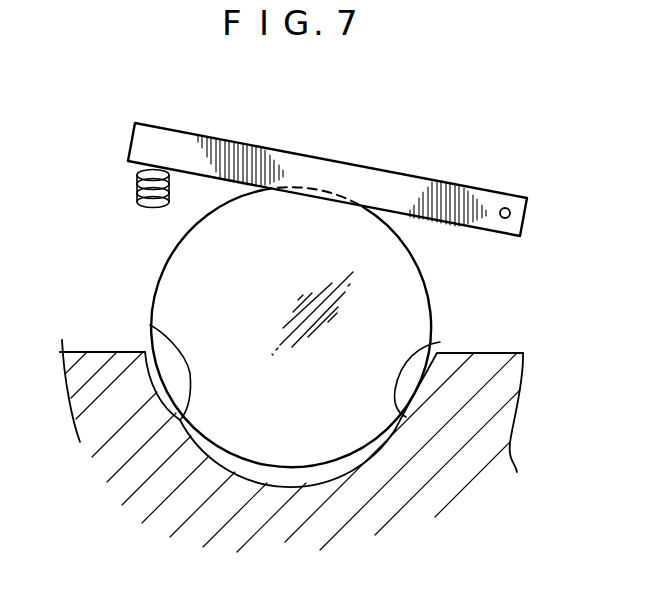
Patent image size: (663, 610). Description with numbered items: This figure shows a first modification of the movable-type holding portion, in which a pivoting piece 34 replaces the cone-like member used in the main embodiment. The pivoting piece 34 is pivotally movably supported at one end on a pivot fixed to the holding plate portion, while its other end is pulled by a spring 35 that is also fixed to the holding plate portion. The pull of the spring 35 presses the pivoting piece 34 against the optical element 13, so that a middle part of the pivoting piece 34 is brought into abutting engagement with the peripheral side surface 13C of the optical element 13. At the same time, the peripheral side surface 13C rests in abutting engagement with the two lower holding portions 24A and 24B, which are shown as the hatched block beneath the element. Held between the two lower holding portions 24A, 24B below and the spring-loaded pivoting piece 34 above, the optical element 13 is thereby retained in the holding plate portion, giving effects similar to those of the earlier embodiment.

The optical element 13 is at (432, 273).
The peripheral side surface 13C is at (432, 304).
The lower holding portion 24A is at (440, 342).
The lower holding portion 24B is at (150, 325).
The pivoting piece 34 is at (233, 142).
The spring 35 is at (140, 192).